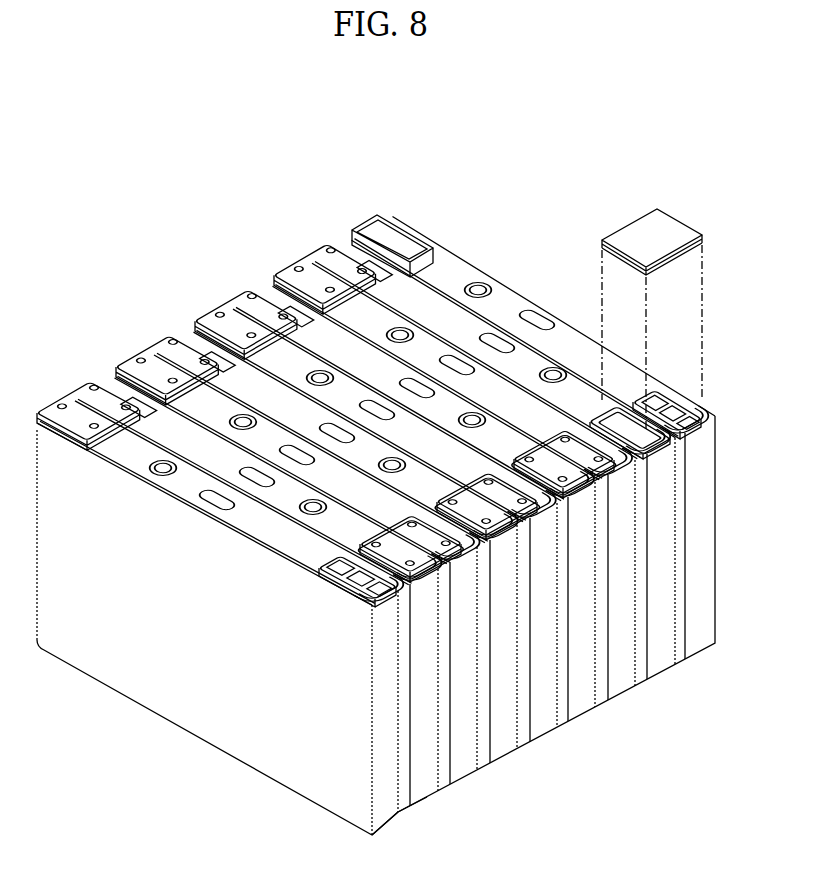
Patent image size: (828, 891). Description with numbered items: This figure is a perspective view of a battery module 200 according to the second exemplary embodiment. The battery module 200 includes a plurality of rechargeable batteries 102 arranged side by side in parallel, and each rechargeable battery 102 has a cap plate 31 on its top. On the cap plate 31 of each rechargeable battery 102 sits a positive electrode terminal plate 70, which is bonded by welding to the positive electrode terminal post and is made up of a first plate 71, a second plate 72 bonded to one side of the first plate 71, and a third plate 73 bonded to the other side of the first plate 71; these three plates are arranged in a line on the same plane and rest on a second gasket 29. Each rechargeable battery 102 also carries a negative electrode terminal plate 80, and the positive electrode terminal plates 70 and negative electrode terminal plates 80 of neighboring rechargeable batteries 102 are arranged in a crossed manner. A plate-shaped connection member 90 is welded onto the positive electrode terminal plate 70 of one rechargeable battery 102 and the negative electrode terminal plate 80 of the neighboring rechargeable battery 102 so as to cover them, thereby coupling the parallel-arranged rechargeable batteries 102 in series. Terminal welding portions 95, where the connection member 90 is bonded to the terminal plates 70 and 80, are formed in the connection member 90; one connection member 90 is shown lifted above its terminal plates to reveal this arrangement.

The battery module 200 is at (311, 158).
The second gasket 29 is at (697, 400).
The cap plate 31 is at (270, 527).
The positive electrode terminal plate 70 is at (663, 383).
The first plate 71 is at (353, 583).
The second plate 72 is at (327, 560).
The third plate 73 is at (372, 600).
The negative electrode terminal plate 80 is at (400, 233).
The connection member 90 is at (88, 387).
The terminal welding portion 95 is at (103, 377).
The rechargeable battery 102 is at (390, 828).